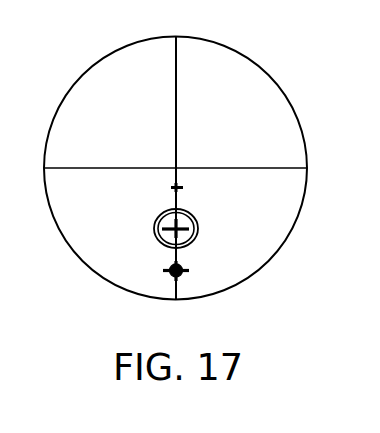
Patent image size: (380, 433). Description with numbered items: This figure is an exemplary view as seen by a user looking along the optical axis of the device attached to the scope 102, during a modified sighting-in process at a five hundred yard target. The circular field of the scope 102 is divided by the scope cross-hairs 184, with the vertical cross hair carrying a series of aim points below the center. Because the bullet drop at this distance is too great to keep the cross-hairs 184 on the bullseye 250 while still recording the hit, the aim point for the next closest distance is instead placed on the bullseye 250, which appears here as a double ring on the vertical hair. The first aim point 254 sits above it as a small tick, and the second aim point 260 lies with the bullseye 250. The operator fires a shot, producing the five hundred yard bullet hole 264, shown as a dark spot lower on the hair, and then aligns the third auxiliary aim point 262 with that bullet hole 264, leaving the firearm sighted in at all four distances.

The scope 102 is at (250, 59).
The scope cross-hairs 184 is at (82, 168).
The first aim point 254 is at (184, 188).
The bullseye 250 is at (221, 215).
The second aim point 260 is at (155, 222).
The third auxiliary aim point 262 is at (166, 272).
The 500 yard bullet hole 264 is at (183, 271).